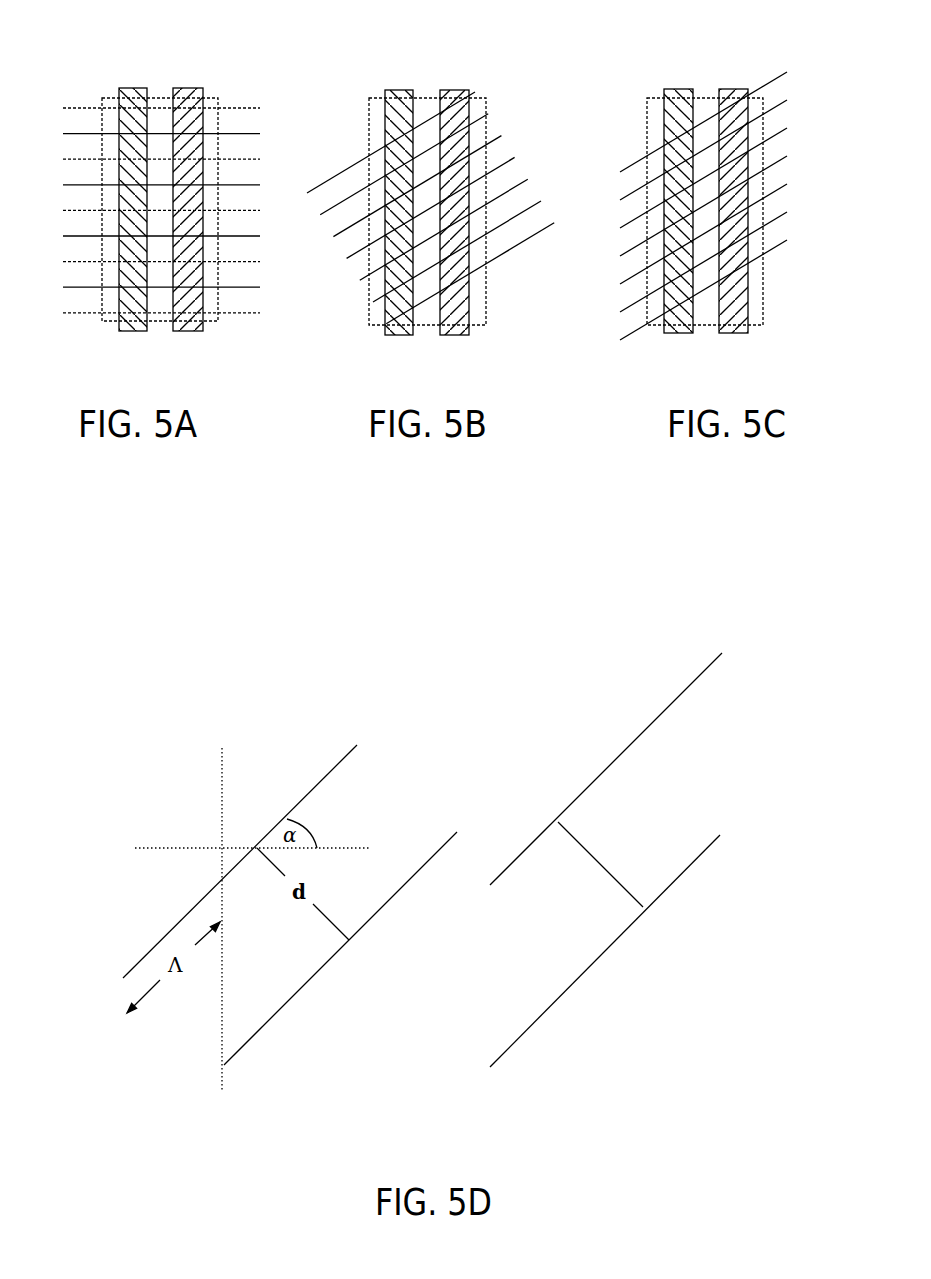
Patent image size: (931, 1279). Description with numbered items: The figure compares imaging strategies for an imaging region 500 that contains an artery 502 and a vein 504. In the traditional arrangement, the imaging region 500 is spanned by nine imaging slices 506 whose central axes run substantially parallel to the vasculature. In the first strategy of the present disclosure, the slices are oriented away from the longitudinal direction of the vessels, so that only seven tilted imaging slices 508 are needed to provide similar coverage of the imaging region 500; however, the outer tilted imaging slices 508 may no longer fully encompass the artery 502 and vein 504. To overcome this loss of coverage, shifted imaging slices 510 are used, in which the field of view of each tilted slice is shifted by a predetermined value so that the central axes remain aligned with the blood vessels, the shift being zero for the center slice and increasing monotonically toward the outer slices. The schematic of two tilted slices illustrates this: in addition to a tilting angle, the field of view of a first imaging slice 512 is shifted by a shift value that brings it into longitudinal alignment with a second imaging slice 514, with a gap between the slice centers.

In FIG. 5A, the imaging region 500 is at (164, 80).
In FIG. 5B, the imaging region 500 is at (431, 80).
In FIG. 5C, the imaging region 500 is at (709, 82).
In FIG. 5A, the artery 502 is at (133, 334).
In FIG. 5B, the artery 502 is at (400, 337).
In FIG. 5C, the artery 502 is at (677, 334).
In FIG. 5A, the vein 504 is at (190, 334).
In FIG. 5B, the vein 504 is at (457, 337).
In FIG. 5C, the vein 504 is at (733, 334).
In FIG. 5A, the imaging slices 506 is at (89, 92).
In FIG. 5B, the tilted imaging slices 508 is at (356, 150).
In FIG. 5C, the shifted imaging slices 510 is at (629, 148).
In FIG. 5D, the first imaging slice 512 is at (328, 740).
In FIG. 5D, the second imaging slice 514 is at (374, 928).